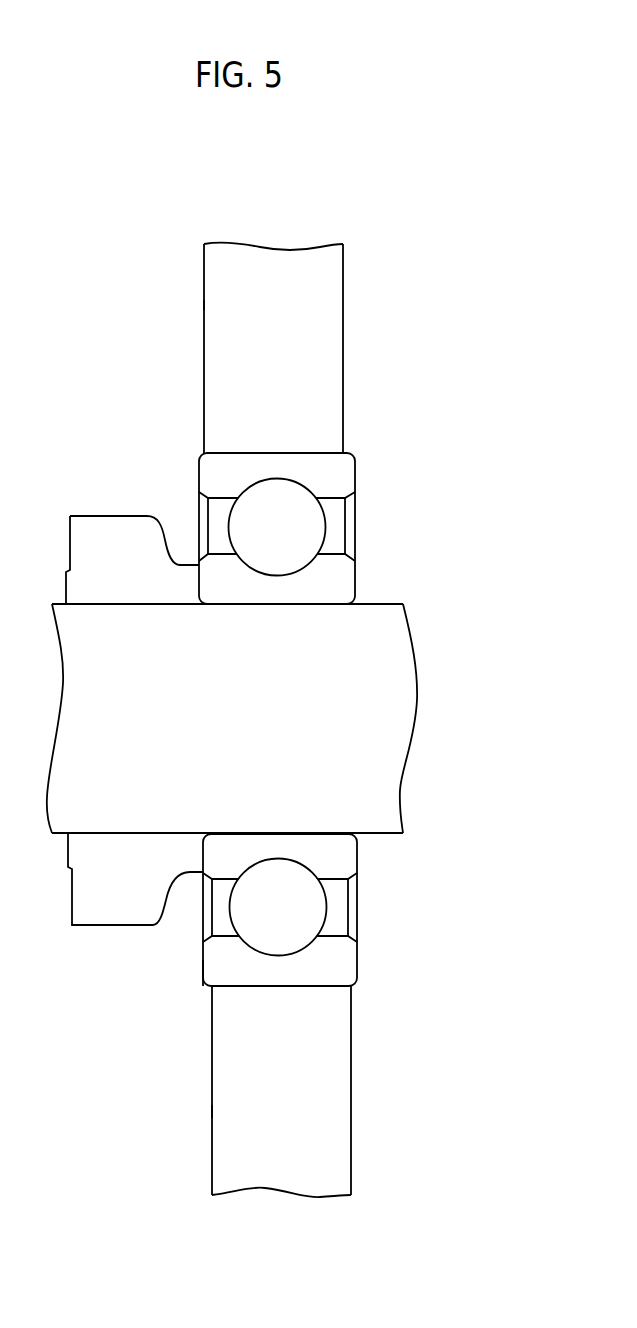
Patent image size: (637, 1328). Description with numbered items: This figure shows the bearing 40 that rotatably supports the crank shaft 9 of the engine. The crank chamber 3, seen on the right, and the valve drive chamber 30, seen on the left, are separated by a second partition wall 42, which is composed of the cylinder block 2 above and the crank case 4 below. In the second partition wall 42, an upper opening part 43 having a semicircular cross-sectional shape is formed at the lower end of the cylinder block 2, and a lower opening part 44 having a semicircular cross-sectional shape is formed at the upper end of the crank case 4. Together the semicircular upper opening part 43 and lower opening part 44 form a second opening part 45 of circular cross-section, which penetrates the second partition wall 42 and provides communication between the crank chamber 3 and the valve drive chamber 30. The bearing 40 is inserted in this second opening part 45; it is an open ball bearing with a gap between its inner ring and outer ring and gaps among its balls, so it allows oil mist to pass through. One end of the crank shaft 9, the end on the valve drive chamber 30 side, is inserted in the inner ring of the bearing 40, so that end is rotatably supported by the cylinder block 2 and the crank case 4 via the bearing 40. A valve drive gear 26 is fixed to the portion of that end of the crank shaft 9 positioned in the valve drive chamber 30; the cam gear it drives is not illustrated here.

The cylinder block 2 is at (343, 337).
The crank chamber 3 is at (409, 433).
The crank case 4 is at (351, 1099).
The crank shaft 9 is at (380, 722).
The valve drive gear 26 is at (108, 926).
The valve drive chamber 30 is at (145, 433).
The bearing 40 is at (350, 860).
The second partition wall 42 is at (223, 304).
The upper opening part 43 is at (355, 453).
The lower opening part 44 is at (357, 978).
The second opening part 45 is at (196, 974).